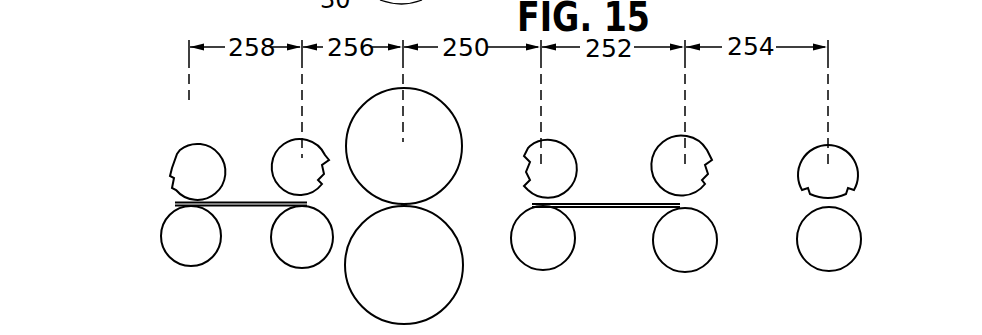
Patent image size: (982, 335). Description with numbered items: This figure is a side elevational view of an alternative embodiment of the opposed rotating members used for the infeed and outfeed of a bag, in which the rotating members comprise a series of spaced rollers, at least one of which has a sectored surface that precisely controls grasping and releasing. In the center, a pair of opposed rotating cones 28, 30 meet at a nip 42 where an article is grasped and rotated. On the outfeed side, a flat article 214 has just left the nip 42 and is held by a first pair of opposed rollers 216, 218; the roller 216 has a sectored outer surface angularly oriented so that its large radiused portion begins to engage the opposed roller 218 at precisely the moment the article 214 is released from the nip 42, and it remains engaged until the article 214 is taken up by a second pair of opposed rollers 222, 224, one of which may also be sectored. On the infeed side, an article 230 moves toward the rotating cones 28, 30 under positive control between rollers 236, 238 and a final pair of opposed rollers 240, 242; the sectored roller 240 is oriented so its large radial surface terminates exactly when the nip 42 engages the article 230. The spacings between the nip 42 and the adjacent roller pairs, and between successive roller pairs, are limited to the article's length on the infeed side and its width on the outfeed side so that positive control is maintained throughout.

The rotating cone 28 is at (438, 116).
The rotating cone 30 is at (452, 281).
The nip 42 is at (433, 207).
The flat article 214 is at (245, 206).
The opposed roller 216 is at (291, 155).
The opposed roller 218 is at (298, 267).
The opposed roller 222 is at (178, 146).
The opposed roller 224 is at (183, 245).
The article 230 is at (597, 204).
The opposed roller 236 is at (692, 153).
The opposed roller 238 is at (698, 254).
The opposed roller 240 is at (551, 154).
The opposed roller 242 is at (559, 250).